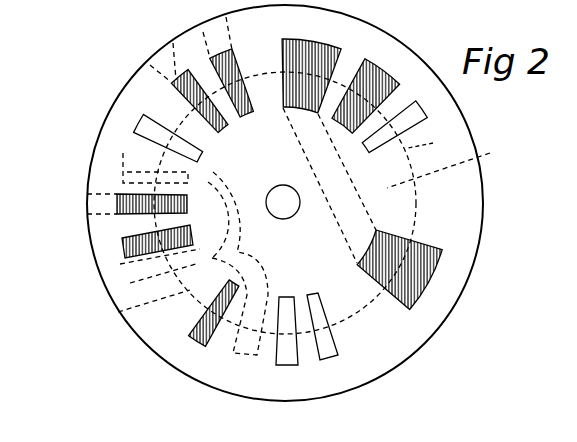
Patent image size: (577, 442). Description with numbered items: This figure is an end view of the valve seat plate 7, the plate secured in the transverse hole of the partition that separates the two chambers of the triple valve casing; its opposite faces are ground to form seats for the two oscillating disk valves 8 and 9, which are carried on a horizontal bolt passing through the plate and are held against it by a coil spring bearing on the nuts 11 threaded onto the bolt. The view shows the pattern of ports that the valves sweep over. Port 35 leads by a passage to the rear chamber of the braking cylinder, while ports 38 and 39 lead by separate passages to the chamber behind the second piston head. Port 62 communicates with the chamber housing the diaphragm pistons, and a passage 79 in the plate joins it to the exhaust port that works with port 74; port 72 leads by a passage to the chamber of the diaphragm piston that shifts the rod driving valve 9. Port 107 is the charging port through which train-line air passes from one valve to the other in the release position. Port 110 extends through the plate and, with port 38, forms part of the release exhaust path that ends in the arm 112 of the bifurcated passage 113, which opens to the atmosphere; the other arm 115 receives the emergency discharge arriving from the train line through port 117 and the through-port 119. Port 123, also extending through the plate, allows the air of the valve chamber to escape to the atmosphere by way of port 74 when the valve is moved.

The valve seat plate 7 is at (103, 118).
The disk valve 8 is at (446, 162).
The disk valve 9 is at (429, 142).
The nuts 11 is at (314, 42).
The port 35 is at (123, 243).
The port 38 is at (117, 203).
The port 39 is at (176, 85).
The port 62 is at (408, 240).
The port 72 is at (226, 57).
The port 74 is at (380, 68).
The passage 79 is at (343, 179).
The port 107 is at (332, 352).
The port 110 is at (200, 152).
The arm 112 is at (132, 163).
The bifurcated port or passage 113 is at (155, 295).
The arm 115 is at (242, 355).
The port 117 is at (188, 339).
The port 119 is at (288, 353).
The port 123 is at (428, 118).